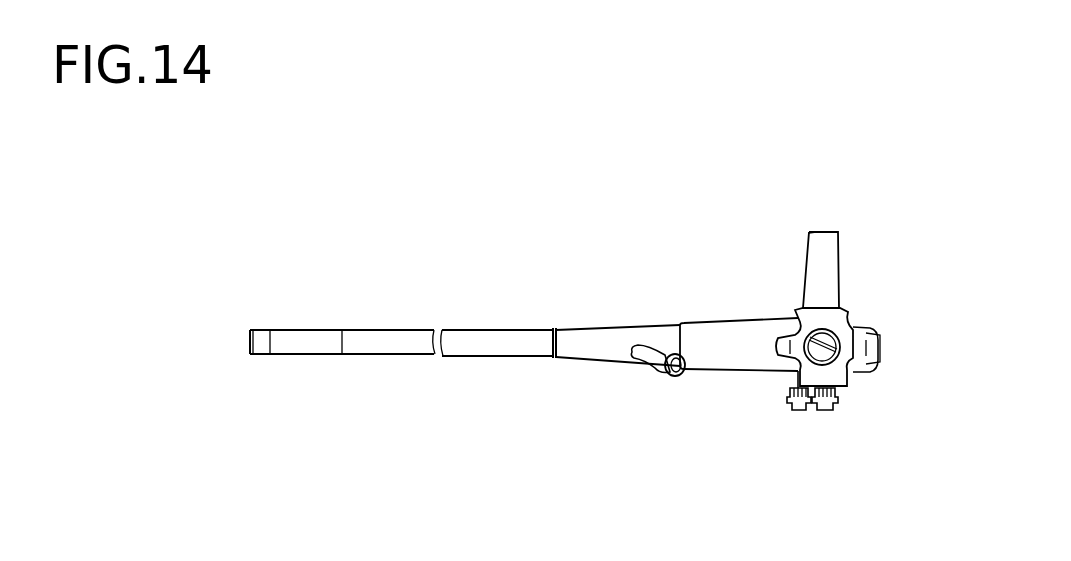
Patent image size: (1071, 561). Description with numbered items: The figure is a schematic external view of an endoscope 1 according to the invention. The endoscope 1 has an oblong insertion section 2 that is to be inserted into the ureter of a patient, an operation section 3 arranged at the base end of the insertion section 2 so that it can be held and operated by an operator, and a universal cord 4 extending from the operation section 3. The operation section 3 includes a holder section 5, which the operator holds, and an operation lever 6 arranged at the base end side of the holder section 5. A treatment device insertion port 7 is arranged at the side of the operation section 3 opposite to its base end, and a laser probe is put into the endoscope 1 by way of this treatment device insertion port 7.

The endoscope 1 is at (547, 224).
The insertion section 2 is at (383, 343).
The operation section 3 is at (793, 452).
The universal cord 4 is at (829, 277).
The holder section 5 is at (720, 352).
The operation lever 6 is at (842, 380).
The treatment device insertion port 7 is at (683, 372).